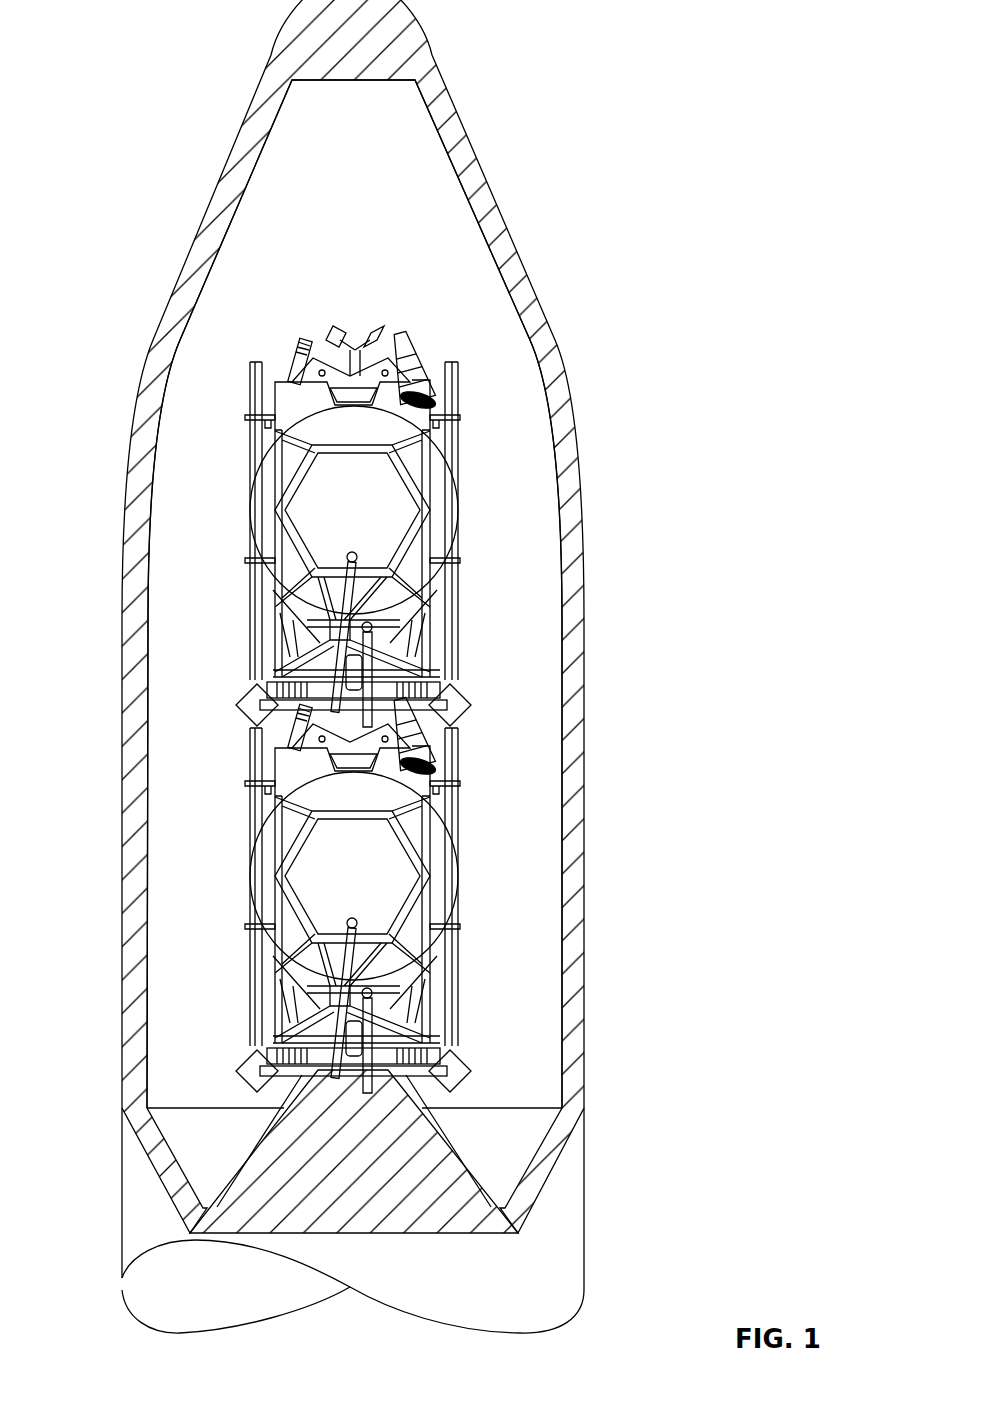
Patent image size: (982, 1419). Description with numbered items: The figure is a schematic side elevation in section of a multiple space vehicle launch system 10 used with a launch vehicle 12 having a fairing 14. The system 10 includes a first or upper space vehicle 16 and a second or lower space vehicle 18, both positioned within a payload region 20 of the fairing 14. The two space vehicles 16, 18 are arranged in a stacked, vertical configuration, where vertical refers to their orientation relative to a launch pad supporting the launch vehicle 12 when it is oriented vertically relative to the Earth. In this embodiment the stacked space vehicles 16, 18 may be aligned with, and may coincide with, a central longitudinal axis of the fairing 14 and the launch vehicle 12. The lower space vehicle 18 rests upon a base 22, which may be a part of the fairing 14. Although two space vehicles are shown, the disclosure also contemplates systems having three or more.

The multiple space vehicle launch system 10 is at (537, 158).
The launch vehicle 12 is at (590, 1235).
The fairing 14 is at (590, 553).
The first or upper space vehicle 16 is at (447, 507).
The second or lower space vehicle 18 is at (447, 889).
The payload region 20 is at (188, 720).
The base 22 is at (387, 1192).